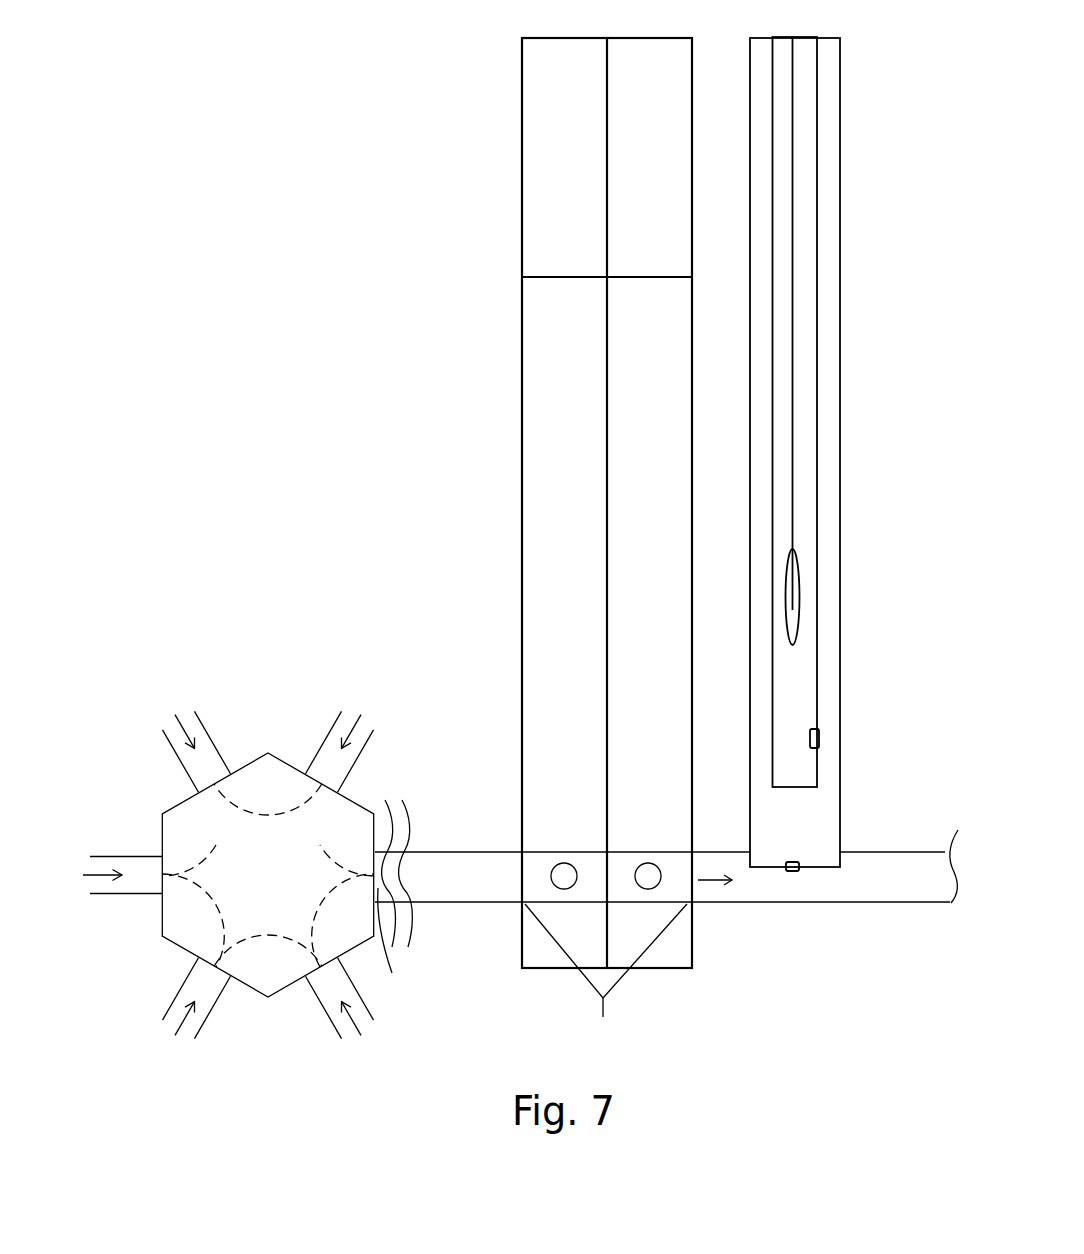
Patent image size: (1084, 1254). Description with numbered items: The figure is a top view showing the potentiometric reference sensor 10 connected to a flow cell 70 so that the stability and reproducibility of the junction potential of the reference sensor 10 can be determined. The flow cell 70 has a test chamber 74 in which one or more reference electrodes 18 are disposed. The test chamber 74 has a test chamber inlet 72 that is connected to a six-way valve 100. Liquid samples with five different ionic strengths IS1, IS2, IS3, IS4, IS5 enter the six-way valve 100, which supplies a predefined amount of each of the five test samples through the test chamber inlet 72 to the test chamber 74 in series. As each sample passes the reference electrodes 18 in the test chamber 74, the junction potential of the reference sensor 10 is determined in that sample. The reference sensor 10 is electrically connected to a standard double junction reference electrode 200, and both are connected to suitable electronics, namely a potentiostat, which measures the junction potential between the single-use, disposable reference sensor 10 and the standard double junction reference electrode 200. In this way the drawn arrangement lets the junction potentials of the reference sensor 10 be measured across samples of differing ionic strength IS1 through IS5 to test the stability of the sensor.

The potentiometric reference sensor 10 is at (510, 412).
The standard double junction reference electrode 200 is at (840, 448).
The six-way valve 100 is at (246, 763).
The liquid sample with first ionic strength IS1 is at (343, 738).
The liquid sample with second ionic strength IS2 is at (192, 740).
The liquid sample with third ionic strength IS3 is at (102, 875).
The liquid sample with fourth ionic strength IS4 is at (189, 1014).
The liquid sample with fifth ionic strength IS5 is at (348, 1013).
The reference electrode 18 is at (563, 862).
The flow cell 70 is at (890, 852).
The test chamber inlet 72 is at (445, 875).
The test chamber 74 is at (606, 978).